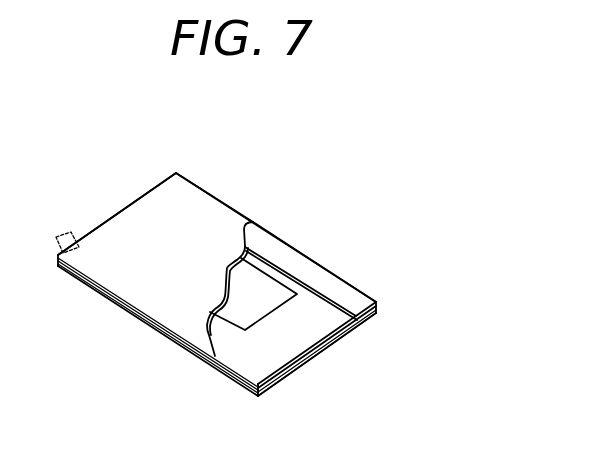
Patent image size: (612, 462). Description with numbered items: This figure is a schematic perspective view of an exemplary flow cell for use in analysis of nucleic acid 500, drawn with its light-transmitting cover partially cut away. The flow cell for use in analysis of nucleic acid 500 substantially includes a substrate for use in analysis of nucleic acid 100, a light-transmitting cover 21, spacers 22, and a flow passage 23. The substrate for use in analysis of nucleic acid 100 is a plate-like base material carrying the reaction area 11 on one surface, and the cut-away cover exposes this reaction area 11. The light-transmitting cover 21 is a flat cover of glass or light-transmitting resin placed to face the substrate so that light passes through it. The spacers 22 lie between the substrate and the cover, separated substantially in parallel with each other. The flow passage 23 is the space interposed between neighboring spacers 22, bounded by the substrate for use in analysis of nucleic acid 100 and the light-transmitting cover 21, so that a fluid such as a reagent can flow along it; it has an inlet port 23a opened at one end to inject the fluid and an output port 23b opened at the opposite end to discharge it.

The flow cell for use in analysis of nucleic acid 500 is at (203, 168).
The substrate for use in analysis of nucleic acid 100 is at (332, 345).
The reaction area 11 is at (258, 287).
The light-transmitting cover 21 is at (205, 220).
The spacers 22 is at (338, 291).
The flow passage 23 is at (263, 347).
The inlet port 23a is at (113, 213).
The output port 23b is at (322, 321).